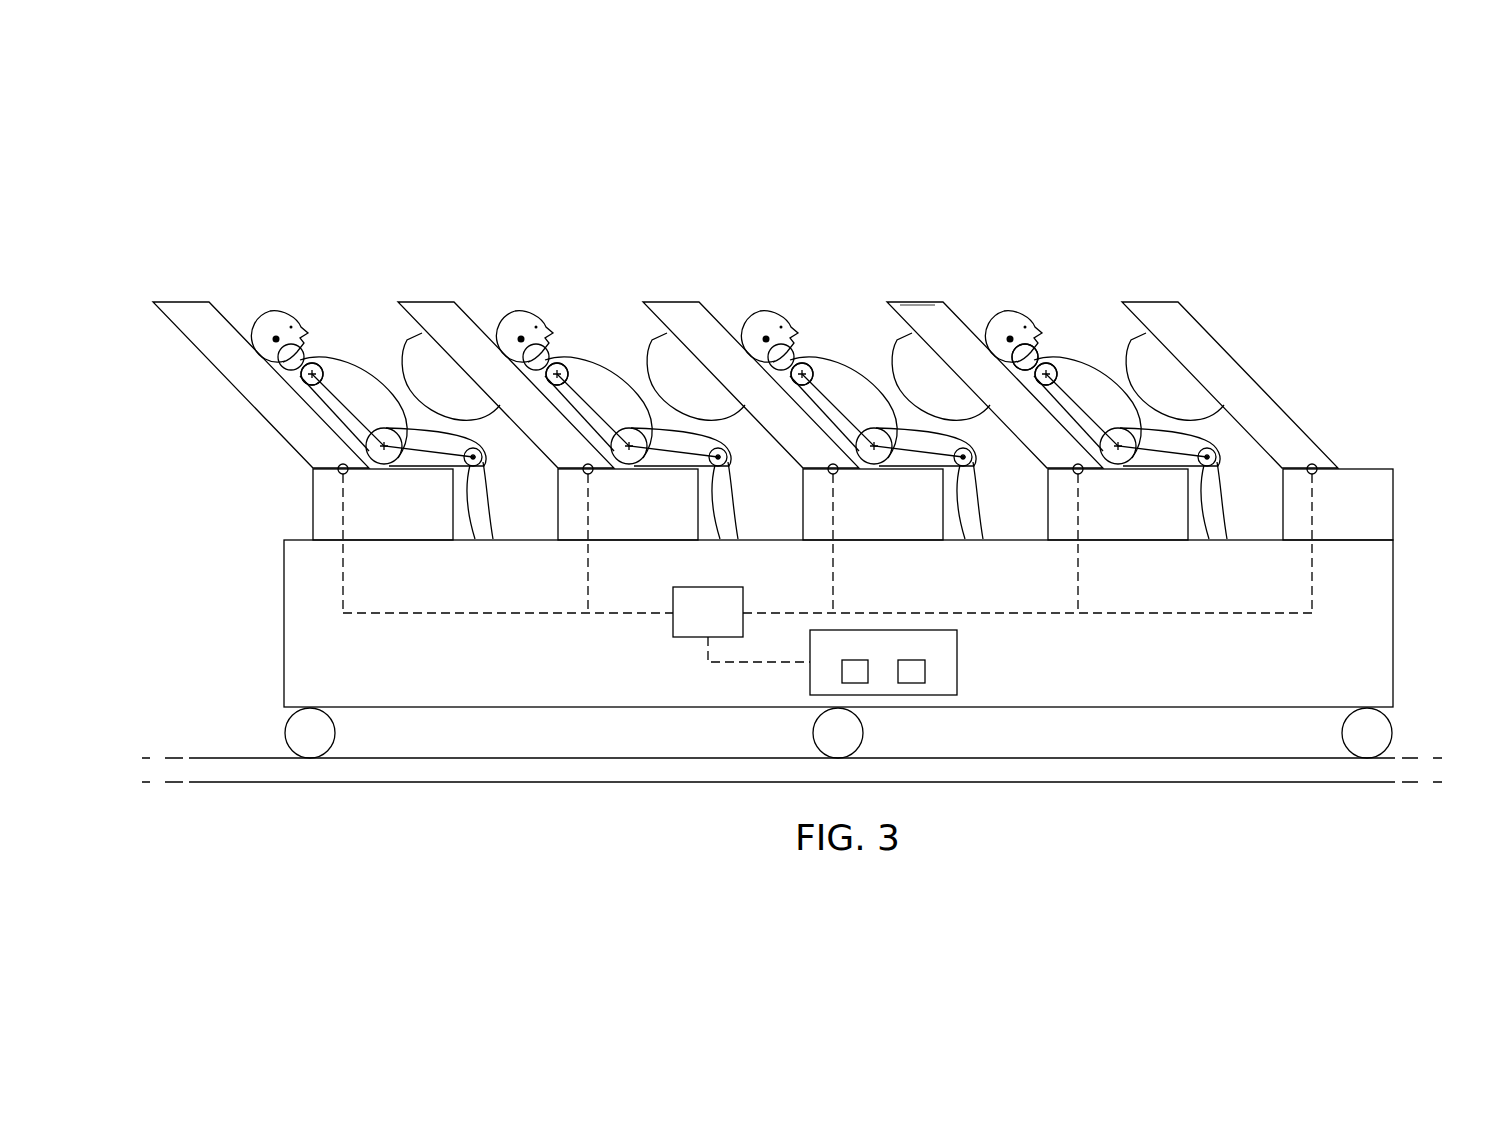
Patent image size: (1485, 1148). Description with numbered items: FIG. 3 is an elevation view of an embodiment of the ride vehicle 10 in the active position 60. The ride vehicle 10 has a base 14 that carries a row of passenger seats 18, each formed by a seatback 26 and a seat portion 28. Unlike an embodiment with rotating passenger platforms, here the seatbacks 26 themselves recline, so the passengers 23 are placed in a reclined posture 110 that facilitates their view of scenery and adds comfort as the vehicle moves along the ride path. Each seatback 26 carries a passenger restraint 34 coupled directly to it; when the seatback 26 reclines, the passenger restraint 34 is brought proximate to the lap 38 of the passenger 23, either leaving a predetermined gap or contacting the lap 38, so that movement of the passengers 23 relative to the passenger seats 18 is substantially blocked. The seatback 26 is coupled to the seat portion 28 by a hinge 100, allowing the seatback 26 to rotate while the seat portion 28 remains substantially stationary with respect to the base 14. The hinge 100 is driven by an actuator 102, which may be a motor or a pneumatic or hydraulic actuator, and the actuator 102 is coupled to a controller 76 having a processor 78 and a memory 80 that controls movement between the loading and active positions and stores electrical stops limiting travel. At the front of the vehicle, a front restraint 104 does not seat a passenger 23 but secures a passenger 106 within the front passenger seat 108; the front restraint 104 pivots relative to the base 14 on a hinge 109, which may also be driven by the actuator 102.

The ride vehicle 10 is at (1262, 252).
The base 14 is at (284, 623).
The passenger seats 18 is at (303, 443).
The passengers 23 is at (739, 385).
The seatback 26 is at (755, 360).
The seat portion 28 is at (400, 470).
The passenger restraint 34 is at (406, 340).
The laps 38 is at (798, 434).
The active position 60 is at (197, 287).
The controller 76 is at (877, 690).
The processor 78 is at (842, 672).
The memory 80 is at (911, 684).
The hinge 100 is at (851, 538).
The actuator 102 is at (708, 587).
The front restraint 104 is at (1302, 437).
The passenger 106 is at (1062, 363).
The front passenger seat 108 is at (928, 310).
The hinge 109 is at (1315, 473).
The reclined posture 110 is at (326, 345).